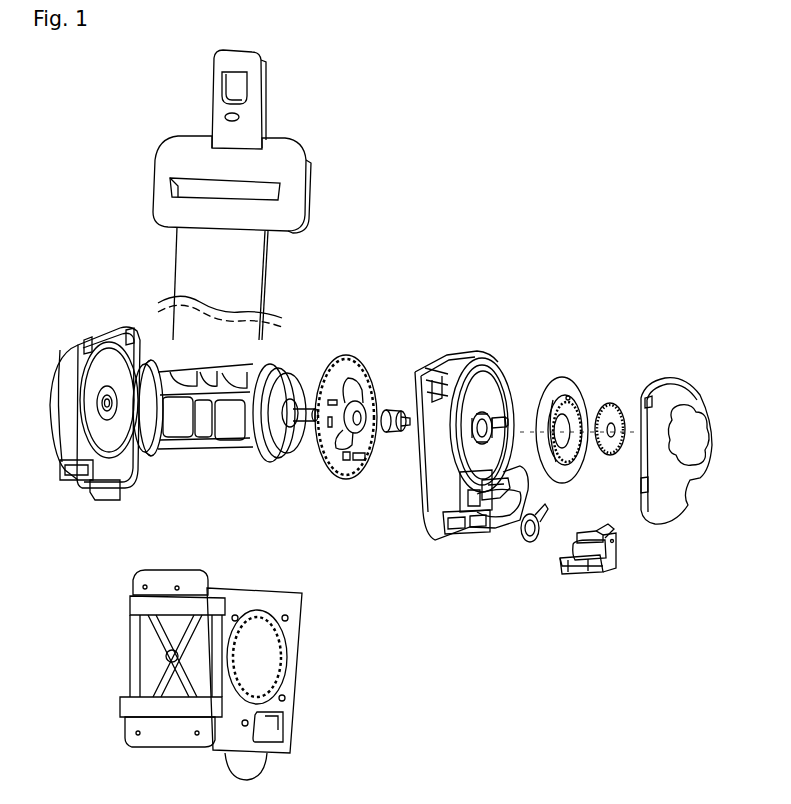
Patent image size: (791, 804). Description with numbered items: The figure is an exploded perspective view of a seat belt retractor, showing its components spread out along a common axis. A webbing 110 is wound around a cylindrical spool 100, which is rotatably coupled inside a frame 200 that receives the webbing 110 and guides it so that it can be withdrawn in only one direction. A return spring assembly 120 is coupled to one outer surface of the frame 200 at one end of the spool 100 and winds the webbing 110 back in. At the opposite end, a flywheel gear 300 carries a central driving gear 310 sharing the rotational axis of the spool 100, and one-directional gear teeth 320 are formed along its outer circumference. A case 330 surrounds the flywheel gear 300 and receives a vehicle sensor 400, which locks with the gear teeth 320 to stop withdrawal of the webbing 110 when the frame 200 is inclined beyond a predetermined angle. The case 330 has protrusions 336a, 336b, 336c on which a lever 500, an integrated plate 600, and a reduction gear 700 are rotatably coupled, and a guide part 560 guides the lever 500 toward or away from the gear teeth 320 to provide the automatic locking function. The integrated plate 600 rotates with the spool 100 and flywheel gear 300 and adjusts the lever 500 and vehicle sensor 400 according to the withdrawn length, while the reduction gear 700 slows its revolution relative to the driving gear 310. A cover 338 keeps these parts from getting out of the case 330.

The webbing 110 is at (250, 274).
The return spring assembly 120 is at (85, 482).
The spool 100 is at (227, 445).
The frame 200 is at (292, 632).
The flywheel gear 300 is at (390, 540).
The driving gear 310 is at (385, 435).
The one-directional gear teeth 320 is at (336, 462).
The case 330 is at (442, 495).
The protrusion 336a is at (487, 412).
The protrusion 336b is at (500, 416).
The protrusion 336c is at (478, 507).
The vehicle sensor 400 is at (603, 575).
The lever 500 is at (533, 543).
The guide part 560 is at (490, 499).
The integrated plate 600 is at (569, 390).
The reduction gear 700 is at (612, 405).
The cover 338 is at (682, 480).